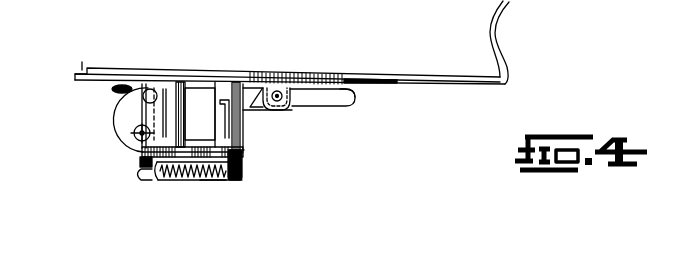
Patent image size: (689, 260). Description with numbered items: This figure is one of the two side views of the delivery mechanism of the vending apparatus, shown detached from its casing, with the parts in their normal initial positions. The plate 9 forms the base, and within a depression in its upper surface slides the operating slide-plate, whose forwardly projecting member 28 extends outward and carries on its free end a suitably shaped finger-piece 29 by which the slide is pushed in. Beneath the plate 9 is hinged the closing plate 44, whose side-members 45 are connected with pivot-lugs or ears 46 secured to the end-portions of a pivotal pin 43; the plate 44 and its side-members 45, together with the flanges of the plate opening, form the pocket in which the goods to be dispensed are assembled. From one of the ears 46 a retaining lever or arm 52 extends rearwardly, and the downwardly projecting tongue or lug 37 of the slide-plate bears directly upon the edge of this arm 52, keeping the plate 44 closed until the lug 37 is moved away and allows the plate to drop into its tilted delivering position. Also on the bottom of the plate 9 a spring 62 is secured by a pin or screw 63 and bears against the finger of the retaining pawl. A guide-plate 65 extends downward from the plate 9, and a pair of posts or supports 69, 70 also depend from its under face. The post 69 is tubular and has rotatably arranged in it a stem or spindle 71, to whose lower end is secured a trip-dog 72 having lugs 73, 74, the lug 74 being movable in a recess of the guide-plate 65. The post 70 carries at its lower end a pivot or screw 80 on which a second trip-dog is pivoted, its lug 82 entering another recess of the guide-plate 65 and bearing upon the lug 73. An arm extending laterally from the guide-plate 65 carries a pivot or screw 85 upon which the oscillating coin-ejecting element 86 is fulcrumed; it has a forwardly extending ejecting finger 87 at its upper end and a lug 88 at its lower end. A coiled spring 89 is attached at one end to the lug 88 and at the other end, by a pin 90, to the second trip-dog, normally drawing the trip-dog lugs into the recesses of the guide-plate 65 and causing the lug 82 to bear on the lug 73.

The plate 9 is at (105, 68).
The forwardly projecting member 28 is at (448, 79).
The finger-piece 29 is at (506, 23).
The pin or screw 63 is at (110, 89).
The spring 62 is at (143, 92).
The coin-ejecting element 86 is at (128, 118).
The pivot or screw 85 is at (140, 133).
The ejecting finger 87 is at (150, 90).
The tubular post 69 is at (175, 85).
The guide-plate 65 is at (203, 100).
The lug or projection 73 is at (192, 148).
The post or support 70 is at (228, 74).
The tongue or lug 37 is at (251, 89).
The lug or projection 74 is at (140, 152).
The lug or projection 88 is at (140, 178).
The trip-dog 72 is at (152, 182).
The stem or spindle 71 is at (167, 181).
The coiled spring 89 is at (192, 178).
The lug or projection 82 is at (206, 179).
The pivot or screw 80 is at (234, 181).
The pin 90 is at (245, 174).
The retaining lever or arm 52 is at (255, 108).
The pivotal pin 43 is at (283, 100).
The pivot-lugs or ears 46 is at (290, 106).
The side-members 45 is at (333, 102).
The closing plate 44 is at (353, 90).